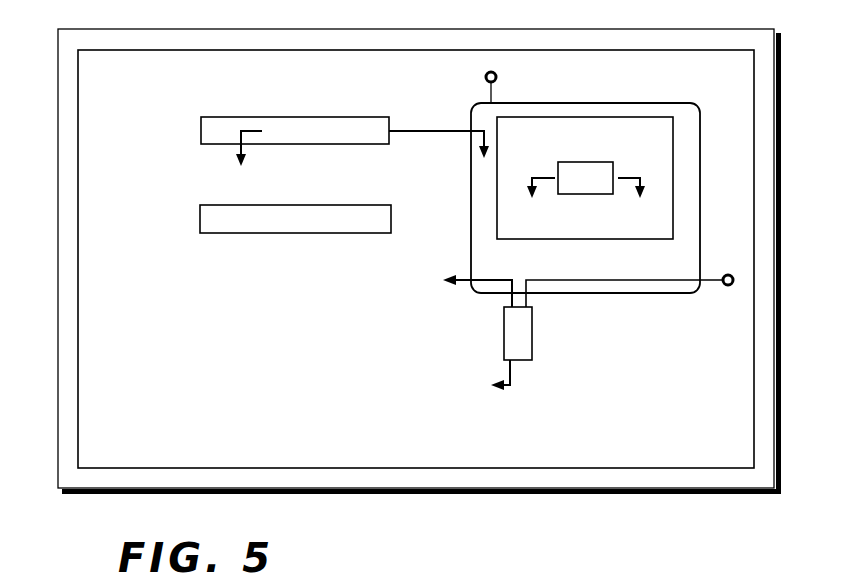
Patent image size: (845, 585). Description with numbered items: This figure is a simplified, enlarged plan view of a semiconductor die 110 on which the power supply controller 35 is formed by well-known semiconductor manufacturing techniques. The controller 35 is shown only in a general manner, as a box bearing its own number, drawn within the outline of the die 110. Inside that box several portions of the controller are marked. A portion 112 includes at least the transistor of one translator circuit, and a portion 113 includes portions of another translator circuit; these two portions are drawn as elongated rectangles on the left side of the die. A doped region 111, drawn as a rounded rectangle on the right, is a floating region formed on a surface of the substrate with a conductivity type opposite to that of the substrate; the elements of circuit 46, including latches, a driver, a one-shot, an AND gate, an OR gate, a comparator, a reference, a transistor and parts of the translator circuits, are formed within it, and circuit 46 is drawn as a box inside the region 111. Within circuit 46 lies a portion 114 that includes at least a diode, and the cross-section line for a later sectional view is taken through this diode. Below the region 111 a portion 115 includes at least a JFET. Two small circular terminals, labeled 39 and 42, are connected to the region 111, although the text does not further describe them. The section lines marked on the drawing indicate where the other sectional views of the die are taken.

The semiconductor die 110 is at (776, 400).
The controller 35 is at (78, 316).
The portion 112 is at (284, 117).
The portion 113 is at (285, 233).
The doped region 111 is at (472, 222).
The circuit 46 is at (587, 239).
The portion 114 is at (597, 162).
The terminal 39 is at (497, 76).
The terminal 42 is at (727, 286).
The portion 115 is at (504, 335).